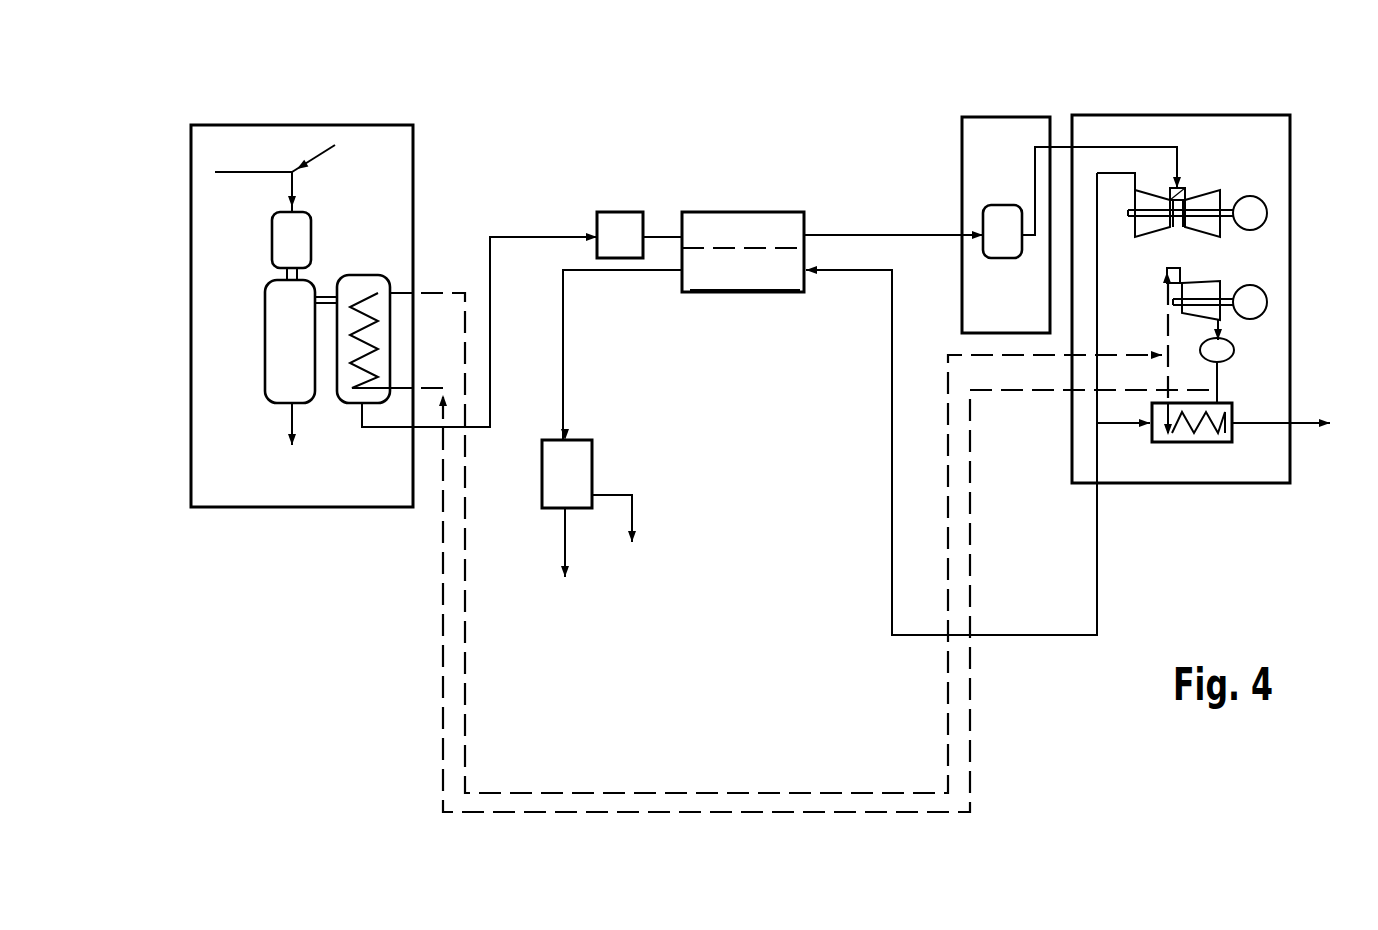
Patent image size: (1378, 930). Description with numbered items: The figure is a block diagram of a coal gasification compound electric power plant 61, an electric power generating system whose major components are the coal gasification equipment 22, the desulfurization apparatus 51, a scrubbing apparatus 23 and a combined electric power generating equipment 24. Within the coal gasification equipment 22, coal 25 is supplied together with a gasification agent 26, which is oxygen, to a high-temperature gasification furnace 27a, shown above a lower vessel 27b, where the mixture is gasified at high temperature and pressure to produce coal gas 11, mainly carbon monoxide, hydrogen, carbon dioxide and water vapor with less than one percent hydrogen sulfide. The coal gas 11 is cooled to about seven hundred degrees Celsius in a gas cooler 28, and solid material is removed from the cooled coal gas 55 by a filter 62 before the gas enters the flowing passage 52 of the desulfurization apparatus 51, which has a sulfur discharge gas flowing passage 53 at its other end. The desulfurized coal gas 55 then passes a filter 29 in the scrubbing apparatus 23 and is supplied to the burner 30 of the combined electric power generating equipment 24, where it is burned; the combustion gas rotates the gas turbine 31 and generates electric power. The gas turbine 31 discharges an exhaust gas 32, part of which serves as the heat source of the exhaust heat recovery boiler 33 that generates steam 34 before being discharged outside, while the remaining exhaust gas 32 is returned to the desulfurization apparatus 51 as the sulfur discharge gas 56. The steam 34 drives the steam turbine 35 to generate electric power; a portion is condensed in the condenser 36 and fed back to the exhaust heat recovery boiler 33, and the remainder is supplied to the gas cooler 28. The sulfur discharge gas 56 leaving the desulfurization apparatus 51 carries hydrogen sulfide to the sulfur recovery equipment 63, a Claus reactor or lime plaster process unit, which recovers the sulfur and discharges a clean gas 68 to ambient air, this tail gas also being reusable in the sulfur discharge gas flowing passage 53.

The coal gas 11 is at (326, 298).
The coal gasification equipment 22 is at (343, 125).
The scrubbing apparatus 23 is at (1010, 117).
The combined electric power generating equipment 24 is at (1205, 115).
The coal 25 is at (238, 172).
The gasification agent 26 is at (322, 152).
The gasification furnace 27a is at (278, 250).
The gasifier lower vessel 27b is at (275, 370).
The gas cooler 28 is at (377, 282).
The filter 29 is at (993, 222).
The burner 30 is at (1185, 195).
The gas turbine 31 is at (1215, 200).
The exhaust gas 32 is at (1097, 298).
The exhaust heat recovery boiler 33 is at (1188, 443).
The steam 34 is at (1165, 305).
The steam turbine 35 is at (1208, 288).
The condenser 36 is at (1225, 352).
The desulfurization apparatus 51 is at (752, 210).
The flowing passage 52 is at (793, 223).
The sulfur discharge gas flowing passage 53 is at (758, 275).
The cooled coal gas 55 is at (527, 237).
The sulfur discharge gas 56 is at (565, 376).
The coal gasification compound electric power plant 61 is at (712, 128).
The filter 62 is at (622, 210).
The sulfur recovery equipment 63 is at (580, 470).
The clean gas 68 is at (565, 540).